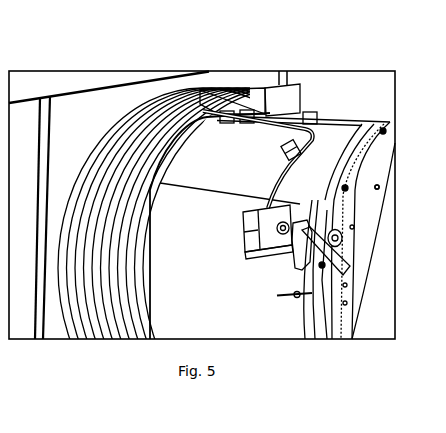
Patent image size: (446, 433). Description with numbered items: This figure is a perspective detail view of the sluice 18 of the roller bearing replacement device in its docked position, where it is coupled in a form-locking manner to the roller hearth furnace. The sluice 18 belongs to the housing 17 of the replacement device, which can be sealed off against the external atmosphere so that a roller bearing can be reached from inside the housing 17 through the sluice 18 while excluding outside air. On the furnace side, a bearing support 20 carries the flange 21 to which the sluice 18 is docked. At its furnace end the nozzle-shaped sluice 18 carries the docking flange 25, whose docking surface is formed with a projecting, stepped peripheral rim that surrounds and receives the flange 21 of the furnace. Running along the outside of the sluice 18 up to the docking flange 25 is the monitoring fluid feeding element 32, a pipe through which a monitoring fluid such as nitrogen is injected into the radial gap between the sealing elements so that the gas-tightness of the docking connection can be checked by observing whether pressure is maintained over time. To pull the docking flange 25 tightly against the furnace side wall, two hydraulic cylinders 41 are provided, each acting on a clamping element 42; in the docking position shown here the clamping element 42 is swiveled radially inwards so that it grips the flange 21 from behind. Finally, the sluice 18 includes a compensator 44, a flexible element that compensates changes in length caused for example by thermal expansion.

The housing 17 is at (87, 117).
The sluice 18 is at (243, 316).
The bearing support 20 is at (376, 313).
The flange 21 is at (385, 183).
The docking flange 25 is at (356, 163).
The monitoring fluid feeding element 32 is at (288, 296).
The hydraulic cylinder 41 is at (253, 232).
The clamping element 42 is at (330, 322).
The compensator 44 is at (100, 323).